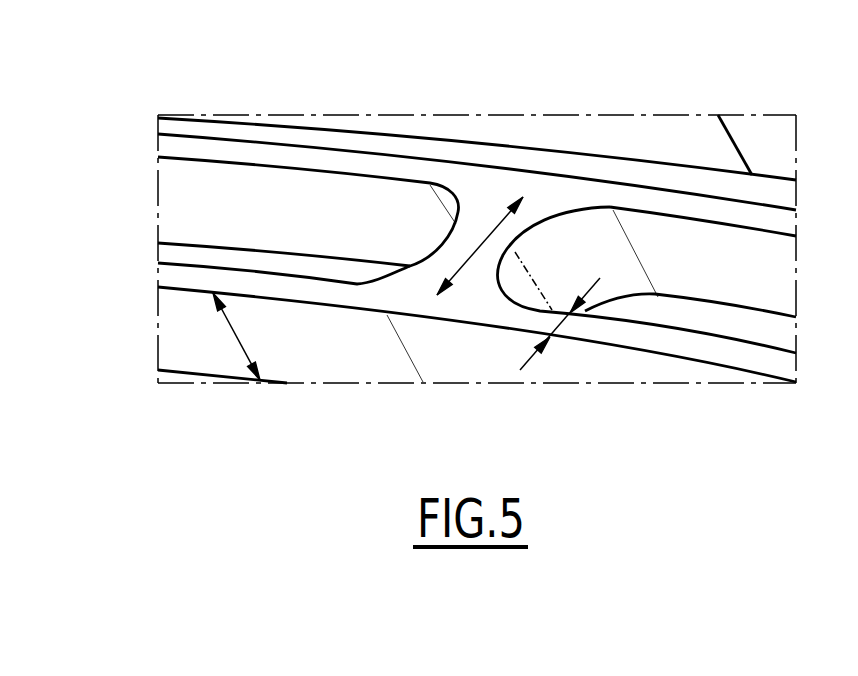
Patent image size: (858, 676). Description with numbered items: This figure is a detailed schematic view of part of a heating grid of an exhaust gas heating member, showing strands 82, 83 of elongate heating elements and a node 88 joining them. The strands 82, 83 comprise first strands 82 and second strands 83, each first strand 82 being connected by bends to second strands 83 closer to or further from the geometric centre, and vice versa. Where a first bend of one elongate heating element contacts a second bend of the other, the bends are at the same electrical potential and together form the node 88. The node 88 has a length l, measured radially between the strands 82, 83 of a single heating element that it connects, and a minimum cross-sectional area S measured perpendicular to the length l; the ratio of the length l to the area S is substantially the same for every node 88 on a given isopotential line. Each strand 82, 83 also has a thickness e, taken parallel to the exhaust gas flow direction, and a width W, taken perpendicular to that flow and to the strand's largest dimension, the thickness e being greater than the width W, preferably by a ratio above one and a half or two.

The first strand 82 is at (207, 278).
The second strand 83 is at (275, 152).
The node 88 is at (607, 264).
The minimum cross-sectional area S is at (537, 281).
The length l is at (480, 246).
The thickness e is at (236, 333).
The width W is at (555, 327).